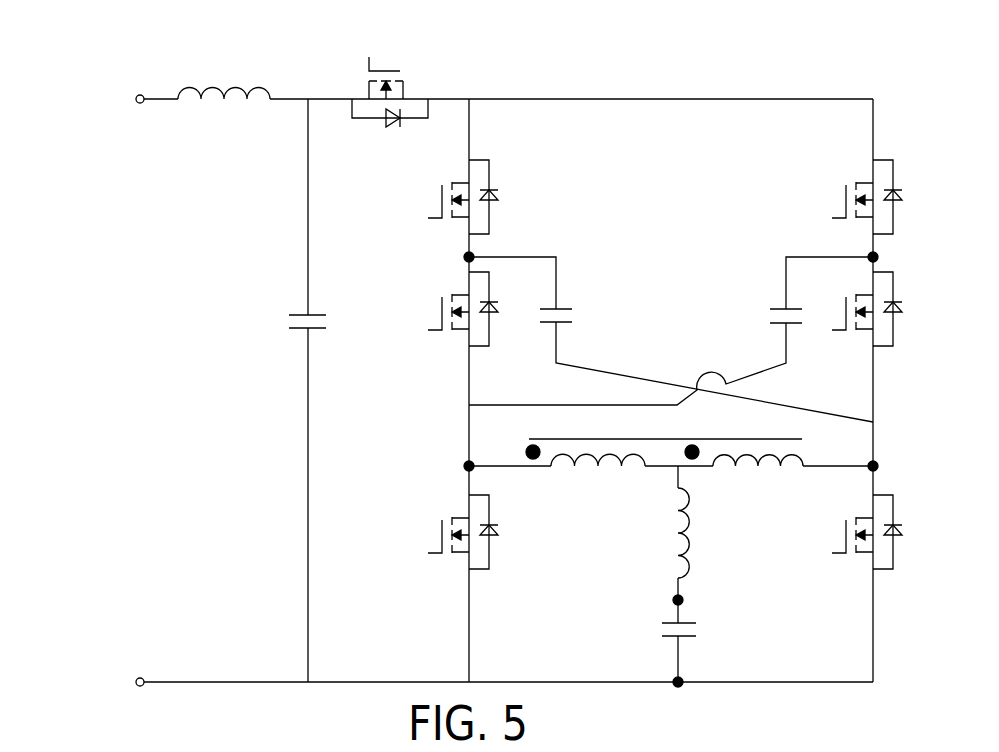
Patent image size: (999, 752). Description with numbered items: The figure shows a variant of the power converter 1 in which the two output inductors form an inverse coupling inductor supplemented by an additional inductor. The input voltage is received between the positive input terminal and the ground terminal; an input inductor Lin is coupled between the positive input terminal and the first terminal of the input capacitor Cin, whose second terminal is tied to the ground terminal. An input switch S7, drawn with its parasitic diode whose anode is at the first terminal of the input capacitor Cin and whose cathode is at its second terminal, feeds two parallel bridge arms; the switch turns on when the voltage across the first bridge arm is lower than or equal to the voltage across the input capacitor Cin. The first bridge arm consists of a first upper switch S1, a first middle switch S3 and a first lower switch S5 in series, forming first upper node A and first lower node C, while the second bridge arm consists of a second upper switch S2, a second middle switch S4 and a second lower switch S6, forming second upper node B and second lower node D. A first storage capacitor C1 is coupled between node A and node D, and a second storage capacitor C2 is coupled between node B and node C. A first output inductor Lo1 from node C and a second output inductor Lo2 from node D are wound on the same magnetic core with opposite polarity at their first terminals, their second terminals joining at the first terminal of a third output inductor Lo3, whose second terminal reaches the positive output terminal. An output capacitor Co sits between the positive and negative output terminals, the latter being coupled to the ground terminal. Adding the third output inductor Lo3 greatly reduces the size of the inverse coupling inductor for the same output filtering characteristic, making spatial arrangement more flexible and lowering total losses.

The power converter 1 is at (991, 62).
The input inductor Lin is at (224, 72).
The input capacitor Cin is at (280, 324).
The input switch S7 is at (390, 79).
The first upper switch S1 is at (453, 197).
The second upper switch S2 is at (857, 197).
The first middle switch S3 is at (453, 309).
The second middle switch S4 is at (857, 309).
The first lower switch S5 is at (453, 532).
The second lower switch S6 is at (857, 532).
The first storage capacitor C1 is at (577, 315).
The second storage capacitor C2 is at (768, 315).
The first output inductor Lo1 is at (598, 479).
The second output inductor Lo2 is at (758, 479).
The third output inductor Lo3 is at (658, 533).
The output capacitor Co is at (659, 630).